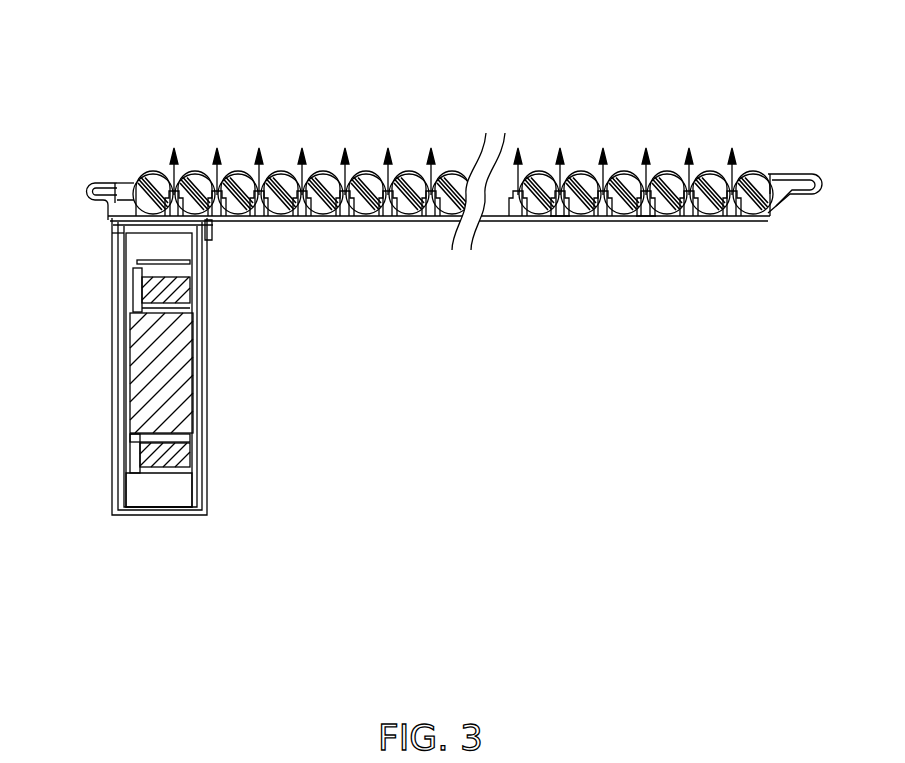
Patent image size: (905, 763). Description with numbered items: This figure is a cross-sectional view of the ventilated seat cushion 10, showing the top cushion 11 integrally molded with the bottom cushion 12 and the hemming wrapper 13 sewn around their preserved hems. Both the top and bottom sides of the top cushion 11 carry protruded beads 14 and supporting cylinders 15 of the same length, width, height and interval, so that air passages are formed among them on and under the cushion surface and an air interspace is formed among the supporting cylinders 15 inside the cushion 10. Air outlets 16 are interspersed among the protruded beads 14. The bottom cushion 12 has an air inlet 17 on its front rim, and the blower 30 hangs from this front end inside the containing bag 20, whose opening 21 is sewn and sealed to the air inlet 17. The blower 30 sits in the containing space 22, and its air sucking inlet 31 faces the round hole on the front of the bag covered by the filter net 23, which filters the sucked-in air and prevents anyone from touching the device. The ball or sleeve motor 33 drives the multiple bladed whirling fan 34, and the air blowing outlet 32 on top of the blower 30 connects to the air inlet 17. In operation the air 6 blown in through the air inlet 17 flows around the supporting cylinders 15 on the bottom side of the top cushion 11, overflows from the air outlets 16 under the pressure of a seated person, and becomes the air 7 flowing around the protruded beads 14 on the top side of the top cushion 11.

The air 6 is at (557, 198).
The air 7 is at (557, 184).
The cushion 10 is at (716, 168).
The top cushion 11 is at (121, 192).
The bottom cushion 12 is at (347, 219).
The hemming wrapper 13 is at (85, 188).
The protruded beads 14 is at (330, 182).
The supporting cylinders 15 is at (406, 214).
The air outlets 16 is at (431, 180).
The air inlet 17 is at (118, 233).
The containing bag 20 is at (211, 351).
The opening 21 is at (160, 226).
The containing space 22 is at (202, 318).
The filter net 23 is at (112, 339).
The blower 30 is at (162, 473).
The air sucking inlet 31 is at (123, 375).
The air blowing outlet 32 is at (137, 252).
The ball or sleeve motor 33 is at (183, 405).
The multiple bladed whirling fan 34 is at (137, 446).